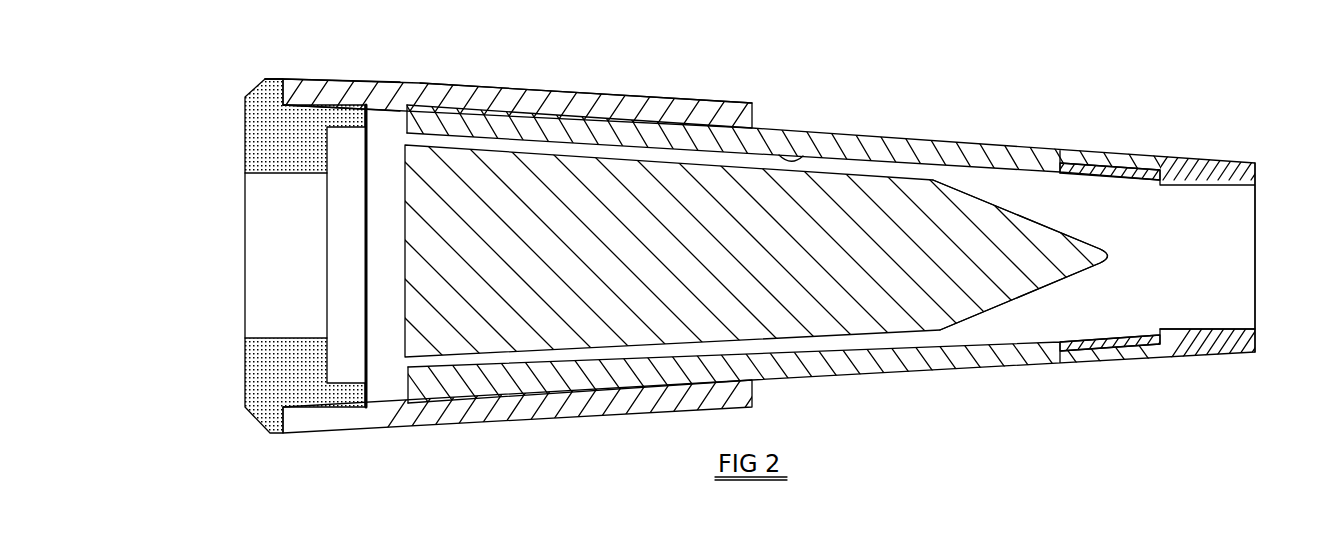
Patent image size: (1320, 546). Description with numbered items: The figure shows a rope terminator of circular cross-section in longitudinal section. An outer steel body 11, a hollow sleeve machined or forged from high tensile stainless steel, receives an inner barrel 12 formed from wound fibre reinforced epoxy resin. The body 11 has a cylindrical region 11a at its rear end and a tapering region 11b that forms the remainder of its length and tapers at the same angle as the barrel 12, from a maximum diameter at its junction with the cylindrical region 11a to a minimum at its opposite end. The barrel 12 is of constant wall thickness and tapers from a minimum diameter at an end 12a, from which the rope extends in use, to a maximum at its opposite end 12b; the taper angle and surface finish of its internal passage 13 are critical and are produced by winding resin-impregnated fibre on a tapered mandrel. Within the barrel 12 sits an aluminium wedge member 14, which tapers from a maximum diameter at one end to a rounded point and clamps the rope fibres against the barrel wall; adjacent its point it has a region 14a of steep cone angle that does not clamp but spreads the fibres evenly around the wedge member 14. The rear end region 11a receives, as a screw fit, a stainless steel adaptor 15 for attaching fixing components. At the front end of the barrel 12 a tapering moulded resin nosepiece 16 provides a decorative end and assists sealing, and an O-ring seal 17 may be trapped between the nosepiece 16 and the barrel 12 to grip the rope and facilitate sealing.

The outer steel body 11 is at (570, 90).
The cylindrical region 11a is at (325, 91).
The tapering region 11b is at (512, 97).
The inner barrel 12 is at (868, 135).
The end of barrel 12a is at (1097, 328).
The opposite end of barrel 12b is at (405, 105).
The internal passage 13 is at (803, 157).
The wedge member 14 is at (907, 220).
The region of steep cone angle 14a is at (962, 237).
The adaptor 15 is at (267, 140).
The tapering nosepiece 16 is at (1203, 165).
The O-ring seal 17 is at (1160, 185).